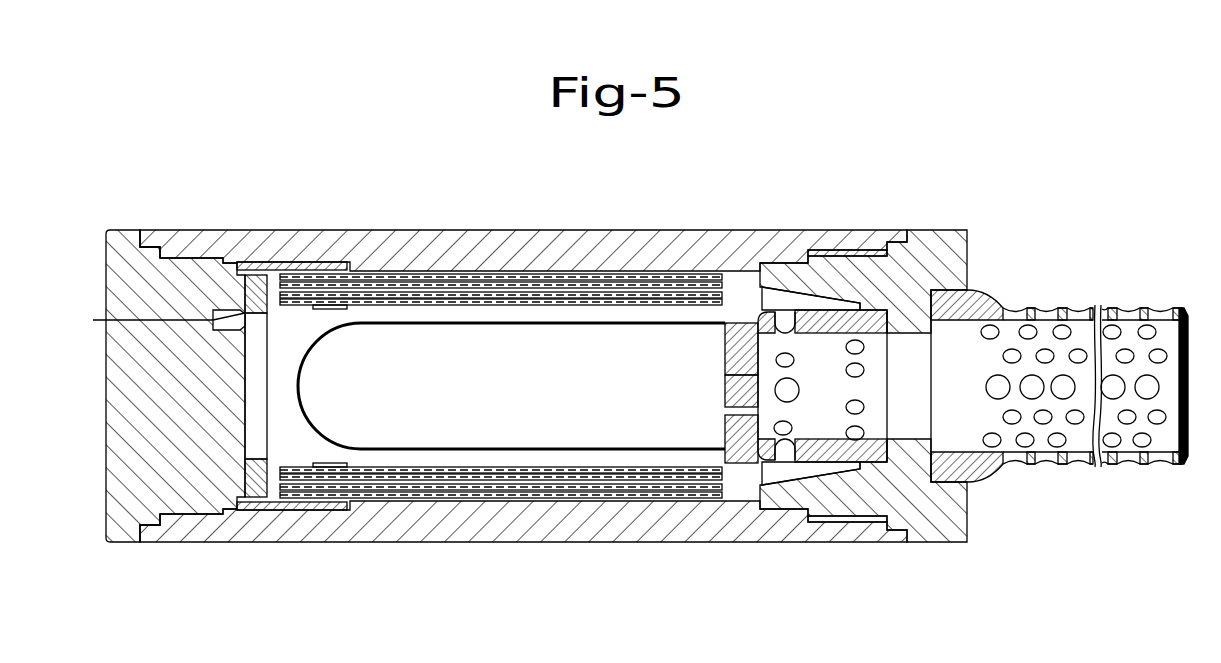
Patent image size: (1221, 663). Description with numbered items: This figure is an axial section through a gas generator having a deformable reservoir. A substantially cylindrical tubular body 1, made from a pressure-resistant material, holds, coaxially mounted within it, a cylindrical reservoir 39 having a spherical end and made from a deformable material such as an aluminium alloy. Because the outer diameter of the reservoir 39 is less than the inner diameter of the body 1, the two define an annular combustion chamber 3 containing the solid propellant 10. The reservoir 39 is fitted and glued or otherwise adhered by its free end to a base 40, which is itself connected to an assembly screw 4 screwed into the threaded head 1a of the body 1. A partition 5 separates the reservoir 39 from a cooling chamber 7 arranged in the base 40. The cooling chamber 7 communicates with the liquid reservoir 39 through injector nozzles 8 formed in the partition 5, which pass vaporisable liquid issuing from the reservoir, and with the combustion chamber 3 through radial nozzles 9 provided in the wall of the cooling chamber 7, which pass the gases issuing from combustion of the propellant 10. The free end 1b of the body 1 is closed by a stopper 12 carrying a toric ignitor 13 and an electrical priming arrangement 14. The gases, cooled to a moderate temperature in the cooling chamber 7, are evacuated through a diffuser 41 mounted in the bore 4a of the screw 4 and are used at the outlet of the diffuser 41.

The tubular body 1 is at (276, 240).
The threaded head 1a is at (830, 248).
The free end 1b is at (160, 236).
The annular combustion chamber 3 is at (441, 312).
The cylindrical reservoir 39 is at (497, 320).
The assembly screw 4 is at (871, 262).
The bore 4a is at (917, 374).
The partition 5 is at (740, 390).
The cooling chamber 7 is at (819, 390).
The injector nozzles 8 is at (738, 371).
The radial nozzles 9 is at (788, 327).
The solid propellant 10 is at (633, 278).
The stopper 12 is at (190, 270).
The toric ignitor 13 is at (249, 305).
The electrical priming arrangement 14 is at (96, 320).
The base 40 is at (880, 324).
The diffuser 41 is at (978, 313).